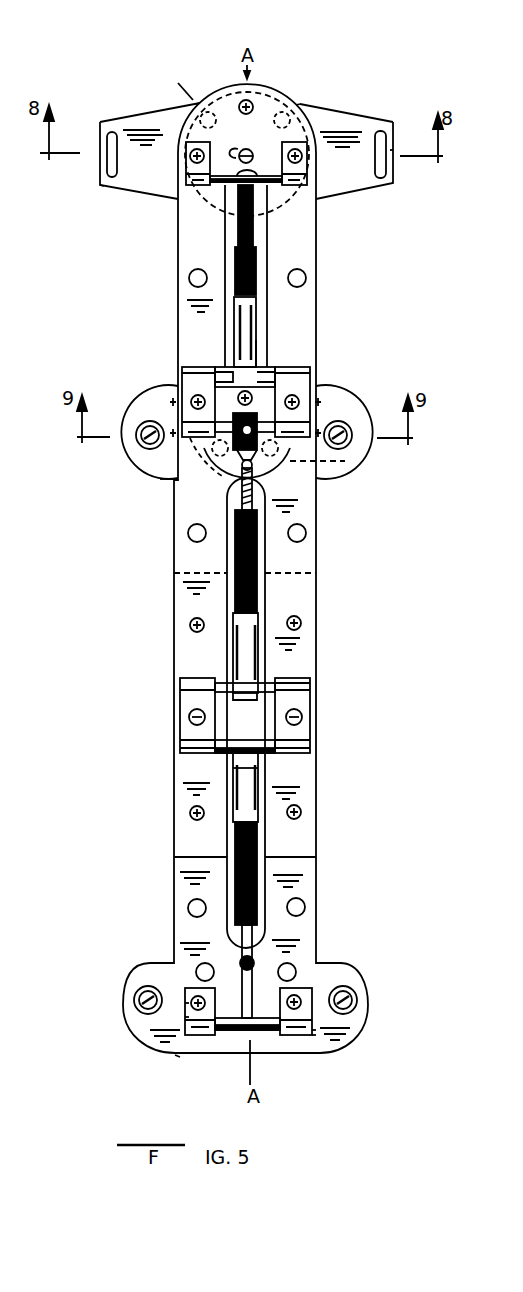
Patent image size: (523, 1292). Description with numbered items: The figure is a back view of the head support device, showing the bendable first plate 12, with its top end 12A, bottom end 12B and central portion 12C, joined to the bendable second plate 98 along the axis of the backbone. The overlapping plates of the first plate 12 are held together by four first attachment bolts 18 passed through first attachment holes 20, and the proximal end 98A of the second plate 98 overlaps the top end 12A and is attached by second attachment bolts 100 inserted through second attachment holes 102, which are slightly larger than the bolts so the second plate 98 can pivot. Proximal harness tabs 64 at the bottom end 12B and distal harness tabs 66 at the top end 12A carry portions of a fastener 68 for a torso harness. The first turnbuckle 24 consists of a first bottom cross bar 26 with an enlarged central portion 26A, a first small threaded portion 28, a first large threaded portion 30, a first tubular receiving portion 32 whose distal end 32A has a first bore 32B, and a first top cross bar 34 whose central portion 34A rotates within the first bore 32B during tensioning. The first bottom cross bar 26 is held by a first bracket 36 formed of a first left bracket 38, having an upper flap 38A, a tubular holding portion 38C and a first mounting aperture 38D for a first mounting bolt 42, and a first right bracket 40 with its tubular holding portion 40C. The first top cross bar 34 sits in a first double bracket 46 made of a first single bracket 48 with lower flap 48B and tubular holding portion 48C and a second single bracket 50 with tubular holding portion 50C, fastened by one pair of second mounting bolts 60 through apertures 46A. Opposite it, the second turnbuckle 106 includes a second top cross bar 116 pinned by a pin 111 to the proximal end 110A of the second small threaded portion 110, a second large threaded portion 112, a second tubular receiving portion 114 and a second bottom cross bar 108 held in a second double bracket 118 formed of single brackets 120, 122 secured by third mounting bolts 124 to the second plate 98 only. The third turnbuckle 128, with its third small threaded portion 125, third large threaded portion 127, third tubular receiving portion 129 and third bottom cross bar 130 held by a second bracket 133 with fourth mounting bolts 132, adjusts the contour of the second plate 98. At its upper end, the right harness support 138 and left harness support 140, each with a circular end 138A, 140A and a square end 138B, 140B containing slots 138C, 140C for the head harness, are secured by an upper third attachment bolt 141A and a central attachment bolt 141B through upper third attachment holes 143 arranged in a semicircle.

The first plate 12 is at (325, 622).
The top end of first plate 12A is at (350, 478).
The bottom end of first plate 12B is at (360, 1032).
The central portion of first plate 12C is at (318, 773).
The first attachment bolts 18 is at (192, 622).
The first attachment holes 20 is at (190, 538).
The first turnbuckle 24 is at (270, 843).
The first bottom cross bar 26 is at (278, 1032).
The enlarged central portion of first bottom cross bar 26A is at (233, 1033).
The first small threaded portion 28 is at (255, 975).
The first large threaded portion 30 is at (257, 915).
The first tubular receiving portion 32 is at (260, 800).
The distal end of first tubular receiving portion 32A is at (240, 758).
The first bore 32B is at (220, 745).
The first top cross bar 34 is at (300, 735).
The bar portion 34A is at (240, 768).
The first bracket 36 is at (333, 1045).
The first left bracket 38 is at (193, 1063).
The upper flap 38A is at (183, 1017).
The tubular holding portion 38C is at (177, 1057).
The first mounting aperture 38D is at (183, 1003).
The first right bracket 40 is at (310, 1037).
The tubular holding portion of first right bracket 40C is at (345, 1030).
The first mounting bolt 42 is at (157, 965).
The first double bracket 46 is at (300, 717).
The apertures 46A is at (188, 717).
The first single bracket 48 is at (185, 735).
The lower flap 48B is at (252, 100).
The tubular holding portion of first single bracket 48C is at (310, 745).
The second single bracket 50 is at (182, 690).
The tubular holding portion of second single bracket 50C is at (190, 678).
The second mounting bolts 60 is at (305, 690).
The proximal harness tabs 64 is at (128, 987).
The distal harness tabs 66 is at (123, 470).
The fastener 68 is at (140, 430).
The second plate 98 is at (328, 226).
The proximal end of second plate 98A is at (290, 383).
The second attachment bolts 100 is at (215, 372).
The second attachment holes 102 is at (345, 462).
The second turnbuckle 106 is at (318, 578).
The second bottom cross bar 108 is at (305, 383).
The second small threaded portion 110 is at (230, 478).
The proximal end of second small threaded portion 110A is at (262, 468).
The pin 111 is at (268, 367).
The second large threaded portion 112 is at (240, 520).
The second tubular receiving portion 114 is at (233, 648).
The second top cross bar 116 is at (258, 678).
The second double bracket 118 is at (143, 463).
The single bracket 120 is at (192, 367).
The single bracket 122 is at (165, 482).
The third mounting bolts 124 is at (185, 378).
The third small threaded portion 125 is at (258, 212).
The third large threaded portion 127 is at (263, 230).
The third turnbuckle 128 is at (270, 262).
The third tubular receiving portion 129 is at (260, 322).
The third bottom cross bar 130 is at (262, 148).
The fourth mounting bolts 132 is at (300, 145).
The second bracket 133 is at (178, 255).
The right harness support 138 is at (395, 177).
The circular end of right harness support 138A is at (246, 92).
The square end of right harness support 138B is at (392, 150).
The slot 138C is at (383, 122).
The left harness support 140 is at (113, 127).
The circular end of left harness support 140A is at (202, 100).
The square end of left harness support 140B is at (100, 185).
The slot 140C is at (94, 163).
The upper third attachment bolt 141A is at (262, 92).
The central attachment bolt 141B is at (245, 126).
The upper third attachment holes 143 is at (170, 80).